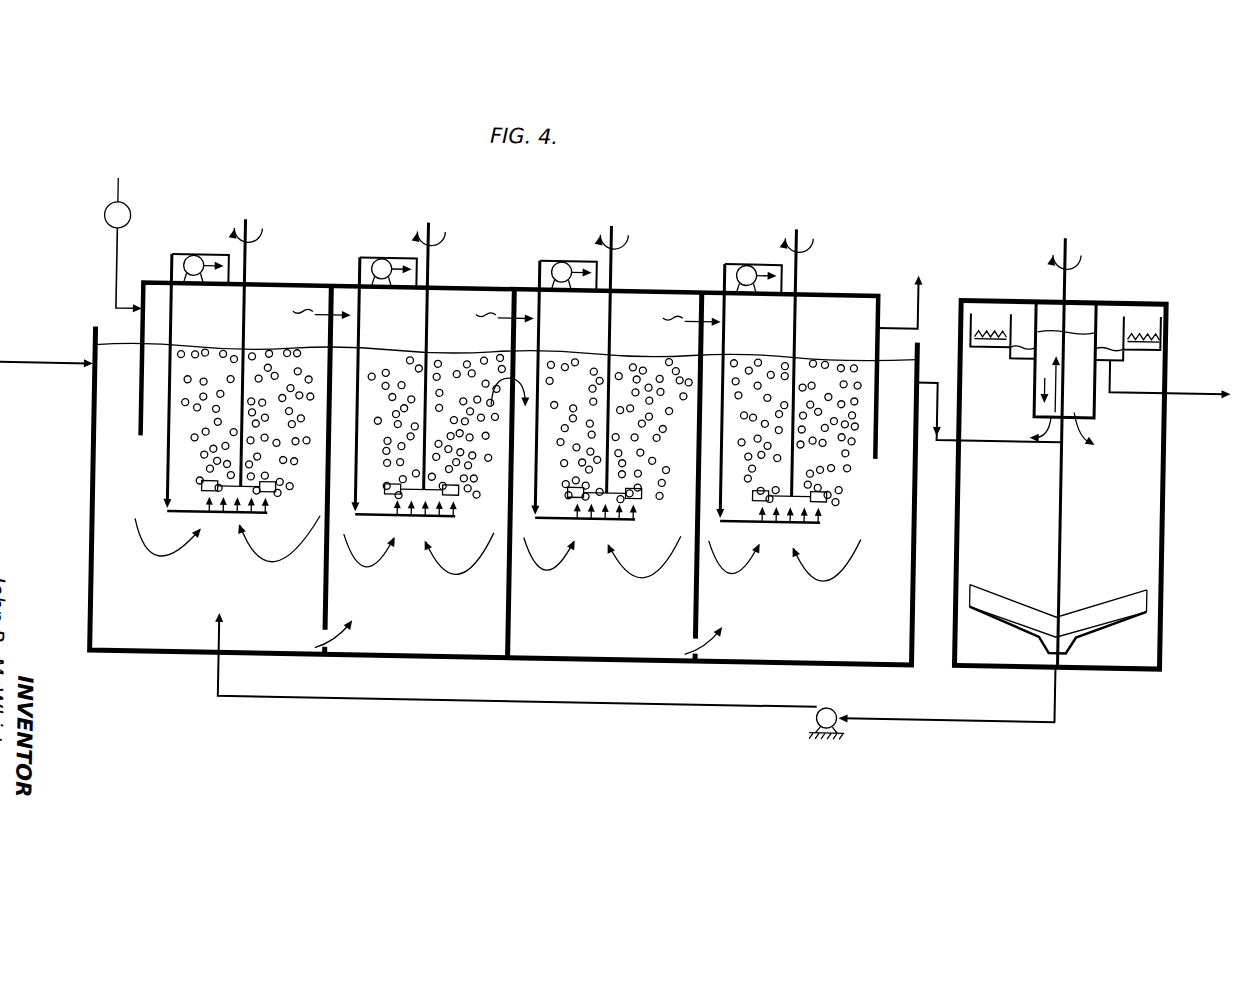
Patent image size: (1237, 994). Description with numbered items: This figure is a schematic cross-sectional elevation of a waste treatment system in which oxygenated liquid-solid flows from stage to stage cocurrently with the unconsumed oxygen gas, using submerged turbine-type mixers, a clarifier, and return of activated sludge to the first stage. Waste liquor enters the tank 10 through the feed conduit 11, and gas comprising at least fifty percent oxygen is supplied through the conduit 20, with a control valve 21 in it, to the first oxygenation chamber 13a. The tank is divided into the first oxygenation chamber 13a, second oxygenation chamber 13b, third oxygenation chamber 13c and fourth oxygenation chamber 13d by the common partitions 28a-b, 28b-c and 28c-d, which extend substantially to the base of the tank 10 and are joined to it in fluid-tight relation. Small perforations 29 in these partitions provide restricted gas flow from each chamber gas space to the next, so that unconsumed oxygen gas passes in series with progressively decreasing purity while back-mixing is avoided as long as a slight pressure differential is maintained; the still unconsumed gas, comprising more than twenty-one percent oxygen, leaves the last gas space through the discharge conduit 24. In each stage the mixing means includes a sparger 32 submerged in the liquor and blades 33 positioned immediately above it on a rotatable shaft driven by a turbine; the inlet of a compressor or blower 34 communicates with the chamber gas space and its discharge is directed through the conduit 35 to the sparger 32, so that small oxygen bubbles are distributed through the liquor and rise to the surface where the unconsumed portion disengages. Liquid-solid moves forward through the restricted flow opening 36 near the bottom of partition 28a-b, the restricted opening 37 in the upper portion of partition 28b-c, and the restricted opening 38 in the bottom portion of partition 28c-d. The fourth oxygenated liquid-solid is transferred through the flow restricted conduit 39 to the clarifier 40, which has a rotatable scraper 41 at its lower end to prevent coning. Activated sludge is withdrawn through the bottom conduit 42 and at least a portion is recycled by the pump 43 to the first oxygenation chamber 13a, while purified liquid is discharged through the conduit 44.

The tank 10 is at (91, 560).
The waste liquor feed conduit 11 is at (50, 368).
The first oxygenation chamber 13a is at (254, 303).
The second oxygenation chamber 13b is at (435, 302).
The third oxygenation chamber 13c is at (615, 307).
The fourth oxygenation chamber 13d is at (843, 323).
The oxygen feed conduit 20 is at (108, 285).
The control valve 21 is at (100, 221).
The gas discharge conduit 24 is at (915, 283).
The first-second chamber common partition 28a-b is at (327, 615).
The second-third chamber common partition 28b-c is at (508, 632).
The third-fourth chamber common partition 28c-d is at (698, 608).
The perforations 29 is at (493, 314).
The sparger 32 is at (191, 519).
The blades 33 is at (279, 492).
The compressor or blower 34 is at (191, 263).
The gas recirculation conduit 35 is at (169, 323).
The restricted flow opening 36 is at (326, 636).
The restricted opening 37 is at (502, 406).
The restricted opening 38 is at (697, 632).
The flow restricted conduit 39 is at (936, 375).
The clarifier 40 is at (1166, 468).
The rotatable scraper 41 is at (1104, 602).
The bottom conduit 42 is at (962, 710).
The pump 43 is at (836, 704).
The purified liquid discharge conduit 44 is at (1178, 381).